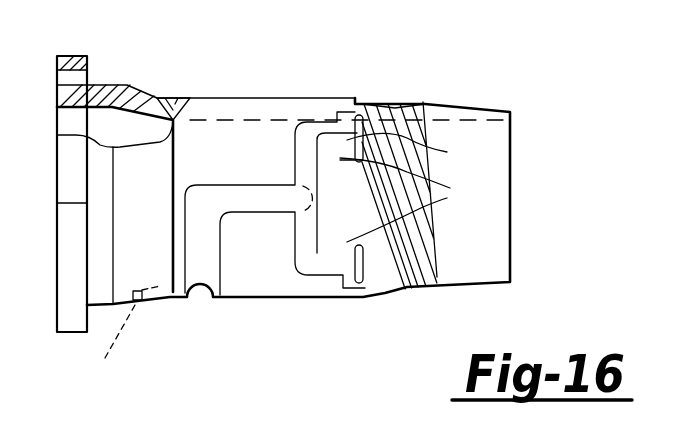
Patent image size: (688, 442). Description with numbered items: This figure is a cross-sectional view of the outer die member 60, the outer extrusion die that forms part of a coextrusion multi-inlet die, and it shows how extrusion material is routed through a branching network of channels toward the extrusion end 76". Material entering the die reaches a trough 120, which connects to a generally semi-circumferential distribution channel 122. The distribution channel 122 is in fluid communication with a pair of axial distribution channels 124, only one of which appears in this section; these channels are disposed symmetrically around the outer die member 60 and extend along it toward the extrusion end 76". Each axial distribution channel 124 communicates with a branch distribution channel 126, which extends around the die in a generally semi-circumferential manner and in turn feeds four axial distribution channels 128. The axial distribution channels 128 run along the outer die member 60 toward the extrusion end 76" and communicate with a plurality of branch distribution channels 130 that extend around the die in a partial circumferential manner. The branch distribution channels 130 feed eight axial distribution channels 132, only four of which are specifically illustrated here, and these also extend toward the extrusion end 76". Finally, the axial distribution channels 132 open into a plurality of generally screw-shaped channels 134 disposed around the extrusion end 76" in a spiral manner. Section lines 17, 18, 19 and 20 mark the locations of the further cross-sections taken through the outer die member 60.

The outer die member 60 is at (229, 98).
The trough 120 is at (120, 339).
The distribution channel 122 is at (210, 300).
The axial distribution channel 124 is at (240, 203).
The branch distribution channel 126 is at (302, 158).
The axial distribution channel 128 is at (415, 215).
The branch distribution channel 130 is at (414, 160).
The axial distribution channel 132 is at (393, 102).
The screw-shaped channel 134 is at (403, 102).
The extrusion end 76 is at (487, 282).
The section line 17- 17 is at (350, 332).
The section line 18- 18 is at (403, 308).
The section line 19- 19 is at (302, 310).
The section line 20- 20 is at (200, 309).